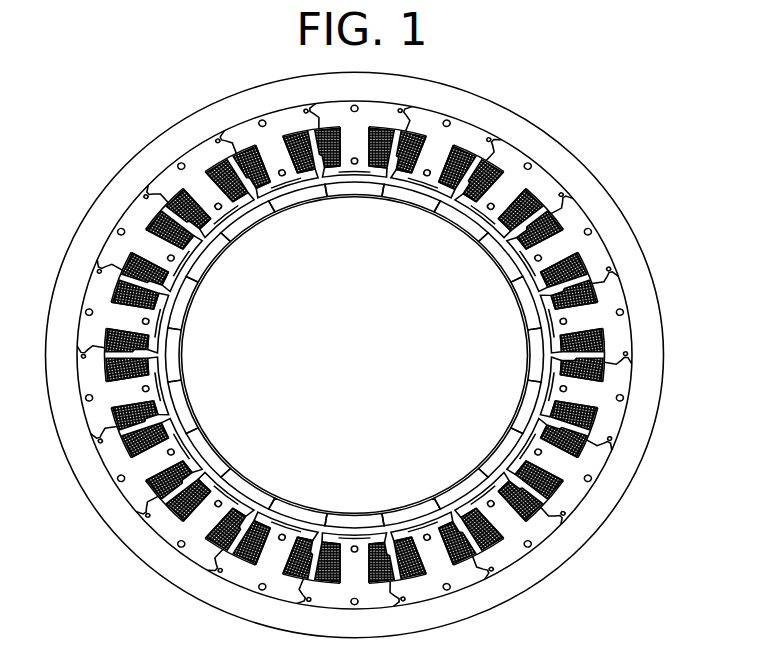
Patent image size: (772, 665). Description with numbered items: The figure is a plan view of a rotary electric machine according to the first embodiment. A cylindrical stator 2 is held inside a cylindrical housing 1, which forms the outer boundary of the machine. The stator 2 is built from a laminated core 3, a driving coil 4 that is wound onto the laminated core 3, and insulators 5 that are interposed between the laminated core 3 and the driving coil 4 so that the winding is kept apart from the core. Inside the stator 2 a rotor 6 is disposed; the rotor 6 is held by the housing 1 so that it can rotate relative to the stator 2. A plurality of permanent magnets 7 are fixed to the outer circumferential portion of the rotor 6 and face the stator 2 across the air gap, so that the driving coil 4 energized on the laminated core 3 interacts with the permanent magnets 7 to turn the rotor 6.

The housing 1 is at (630, 489).
The stator 2 is at (483, 153).
The laminated core 3 is at (533, 180).
The driving coil 4 is at (547, 282).
The insulators 5 is at (585, 260).
The rotor 6 is at (547, 377).
The permanent magnets 7 is at (533, 343).